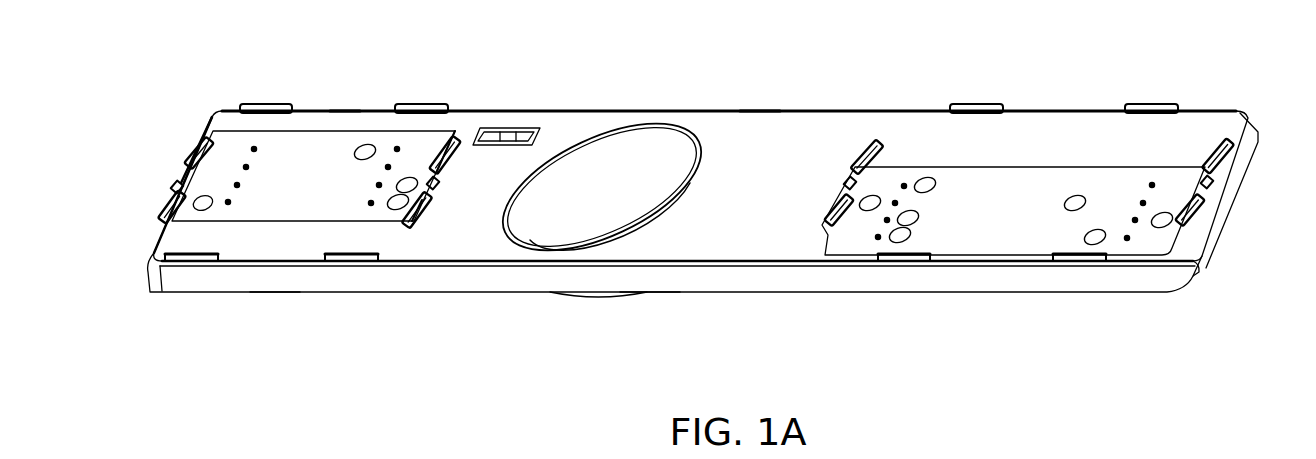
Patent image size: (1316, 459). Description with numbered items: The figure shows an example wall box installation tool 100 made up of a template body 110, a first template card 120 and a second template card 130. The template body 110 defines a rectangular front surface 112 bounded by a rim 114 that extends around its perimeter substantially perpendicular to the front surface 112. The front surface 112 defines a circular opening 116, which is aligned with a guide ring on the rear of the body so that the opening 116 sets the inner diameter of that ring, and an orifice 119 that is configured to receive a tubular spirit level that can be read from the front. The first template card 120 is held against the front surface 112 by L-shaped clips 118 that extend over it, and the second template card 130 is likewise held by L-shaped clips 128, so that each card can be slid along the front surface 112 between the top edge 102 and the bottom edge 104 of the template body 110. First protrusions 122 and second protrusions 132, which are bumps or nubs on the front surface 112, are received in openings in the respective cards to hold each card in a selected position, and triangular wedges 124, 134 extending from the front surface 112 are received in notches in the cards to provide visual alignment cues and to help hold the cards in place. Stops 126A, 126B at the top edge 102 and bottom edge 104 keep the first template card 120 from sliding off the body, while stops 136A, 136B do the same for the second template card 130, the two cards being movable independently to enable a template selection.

The wall box installation tool 100 is at (120, 82).
The top edge 102 is at (342, 110).
The bottom edge 104 is at (272, 270).
The template body 110 is at (743, 300).
The front surface 112 is at (757, 122).
The rim 114 is at (650, 280).
The opening 116 is at (642, 128).
The clips 118 is at (192, 157).
The orifice 119 is at (535, 128).
The first template card 120 is at (300, 165).
The first protrusions 122 is at (178, 183).
The triangular wedges 124 is at (217, 115).
The stops 126A is at (268, 104).
The stops 126B is at (193, 266).
The clips 128 is at (872, 142).
The second template card 130 is at (1010, 243).
The second protrusions 132 is at (845, 192).
The triangular wedges 134 is at (852, 180).
The stops 136A is at (983, 104).
The stops 136B is at (912, 266).